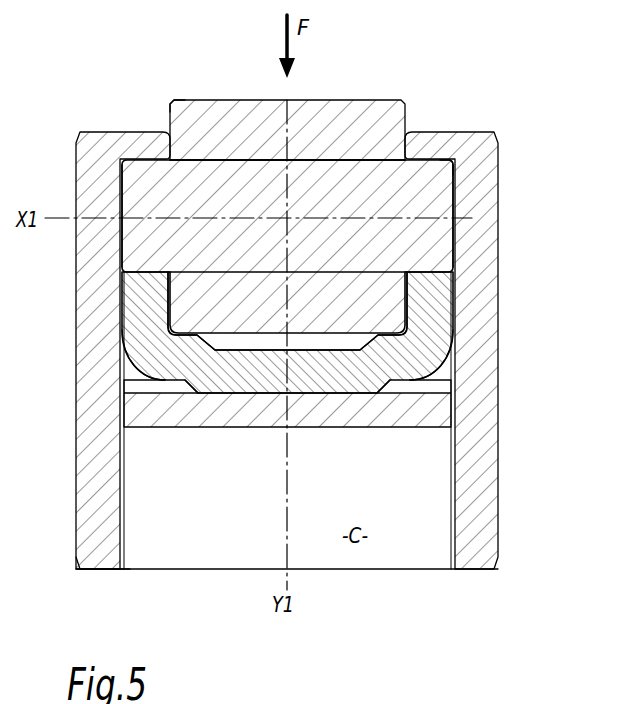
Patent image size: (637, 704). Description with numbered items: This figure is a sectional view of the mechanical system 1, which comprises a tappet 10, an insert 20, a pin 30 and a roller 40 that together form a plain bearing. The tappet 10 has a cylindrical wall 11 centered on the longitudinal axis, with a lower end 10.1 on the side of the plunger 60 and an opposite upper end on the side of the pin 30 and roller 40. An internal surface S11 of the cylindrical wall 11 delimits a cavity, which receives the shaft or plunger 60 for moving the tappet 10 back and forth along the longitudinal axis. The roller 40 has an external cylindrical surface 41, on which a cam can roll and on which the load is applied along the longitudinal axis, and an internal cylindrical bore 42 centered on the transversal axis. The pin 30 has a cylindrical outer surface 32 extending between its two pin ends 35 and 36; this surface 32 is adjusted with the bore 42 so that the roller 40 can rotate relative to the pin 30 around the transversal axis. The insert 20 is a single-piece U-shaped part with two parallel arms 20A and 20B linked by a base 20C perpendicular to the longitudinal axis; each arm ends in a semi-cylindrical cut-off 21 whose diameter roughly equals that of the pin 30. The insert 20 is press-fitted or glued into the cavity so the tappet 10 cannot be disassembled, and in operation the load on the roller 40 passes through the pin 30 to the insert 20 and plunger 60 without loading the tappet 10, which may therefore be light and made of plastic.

The mechanical system 1 is at (108, 105).
The tappet 10 is at (478, 460).
The lower end 10.1 is at (100, 570).
The cylindrical wall 11 is at (478, 377).
The internal surface S11 is at (125, 511).
The insert 20 is at (260, 393).
The arm 20A is at (147, 302).
The arm 20B is at (432, 293).
The base 20C is at (337, 373).
The semi-cylindrical cut-off 21 is at (153, 262).
The pin 30 is at (423, 173).
The cylindrical outer surface 32 is at (332, 150).
The pin end 35 is at (120, 180).
The pin end 36 is at (462, 193).
The roller 40 is at (238, 122).
The external surface 41 is at (200, 96).
The internal cylindrical bore 42 is at (380, 176).
The plunger 60 is at (150, 410).